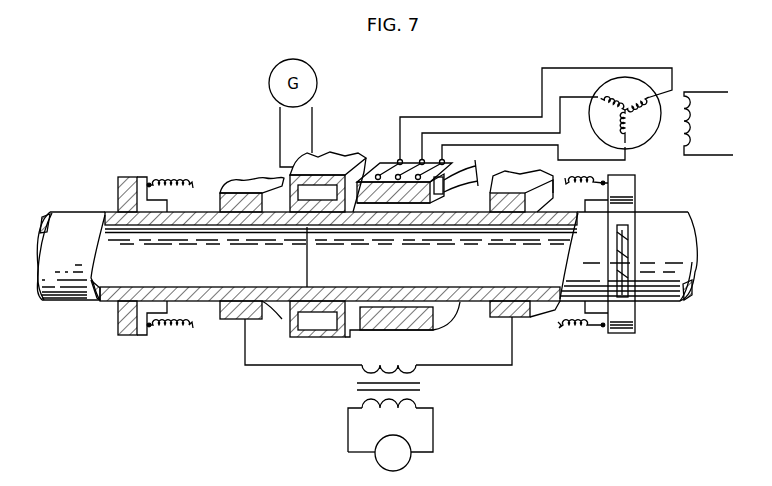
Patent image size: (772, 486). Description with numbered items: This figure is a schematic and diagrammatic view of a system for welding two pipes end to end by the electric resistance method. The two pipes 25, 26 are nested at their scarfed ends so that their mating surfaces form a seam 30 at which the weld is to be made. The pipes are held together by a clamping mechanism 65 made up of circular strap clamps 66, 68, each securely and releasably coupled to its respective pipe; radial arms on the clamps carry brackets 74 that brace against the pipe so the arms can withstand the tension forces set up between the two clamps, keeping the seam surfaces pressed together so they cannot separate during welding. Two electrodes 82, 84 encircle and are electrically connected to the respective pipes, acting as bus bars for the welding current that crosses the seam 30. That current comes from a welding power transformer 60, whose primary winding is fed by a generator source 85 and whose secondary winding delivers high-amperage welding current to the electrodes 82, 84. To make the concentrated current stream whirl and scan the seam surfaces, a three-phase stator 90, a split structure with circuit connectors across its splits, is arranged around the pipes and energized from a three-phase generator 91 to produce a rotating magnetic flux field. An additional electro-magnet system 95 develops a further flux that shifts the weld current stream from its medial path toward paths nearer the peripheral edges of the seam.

The pipe 25 is at (67, 230).
The pipe 26 is at (672, 222).
The seam 30 is at (305, 253).
The welding power transformer 60 is at (429, 383).
The clamping mechanism 65 is at (170, 181).
The strap clamp 66 is at (118, 184).
The strap clamp 68 is at (635, 192).
The bracket 74 is at (168, 206).
The electrode 82 is at (248, 190).
The electrode 84 is at (522, 184).
The generator source 85 is at (380, 459).
The three-phase stator 90 is at (367, 172).
The three-phase generator 91 is at (623, 85).
The electro-magnet system 95 is at (331, 164).